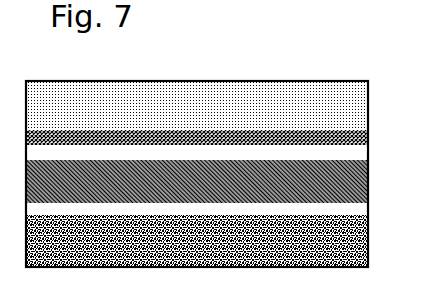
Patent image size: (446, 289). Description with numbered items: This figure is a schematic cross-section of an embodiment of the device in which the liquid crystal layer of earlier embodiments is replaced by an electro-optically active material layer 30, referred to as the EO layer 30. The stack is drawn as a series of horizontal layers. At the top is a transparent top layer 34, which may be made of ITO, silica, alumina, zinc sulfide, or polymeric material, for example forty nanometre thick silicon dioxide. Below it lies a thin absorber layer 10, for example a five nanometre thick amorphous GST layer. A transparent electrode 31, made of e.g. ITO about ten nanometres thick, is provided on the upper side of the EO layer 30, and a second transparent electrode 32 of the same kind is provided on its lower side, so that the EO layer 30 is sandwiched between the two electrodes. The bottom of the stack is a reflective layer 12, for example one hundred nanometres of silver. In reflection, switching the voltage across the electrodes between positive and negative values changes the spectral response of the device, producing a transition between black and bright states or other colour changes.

The transparent top layer 34 is at (370, 106).
The absorber layer 10 is at (370, 141).
The transparent electrode 31 is at (370, 157).
The electro-optically active material layer 30 is at (370, 178).
The transparent electrode 32 is at (370, 211).
The reflective layer 12 is at (370, 248).